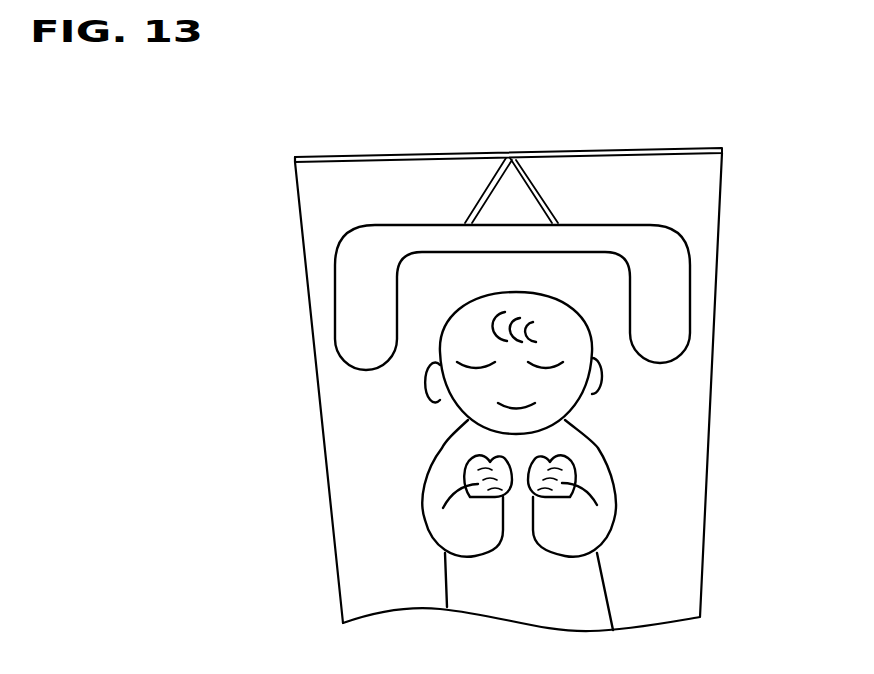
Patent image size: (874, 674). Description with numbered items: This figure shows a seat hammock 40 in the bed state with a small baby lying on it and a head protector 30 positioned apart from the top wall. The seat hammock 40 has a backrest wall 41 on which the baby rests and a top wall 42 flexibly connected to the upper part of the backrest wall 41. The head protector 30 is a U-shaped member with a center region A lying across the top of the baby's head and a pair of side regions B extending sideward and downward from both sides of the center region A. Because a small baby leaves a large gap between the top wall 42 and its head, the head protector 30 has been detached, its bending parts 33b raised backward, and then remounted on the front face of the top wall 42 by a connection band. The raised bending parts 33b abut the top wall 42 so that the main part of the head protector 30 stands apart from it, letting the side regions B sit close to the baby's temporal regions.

The head protector 30 is at (688, 214).
The bending parts 33b is at (530, 185).
The seat hammock 40 is at (287, 262).
The backrest wall 41 is at (685, 439).
The top wall 42 is at (651, 148).
The center region A is at (428, 235).
The side regions B is at (348, 345).